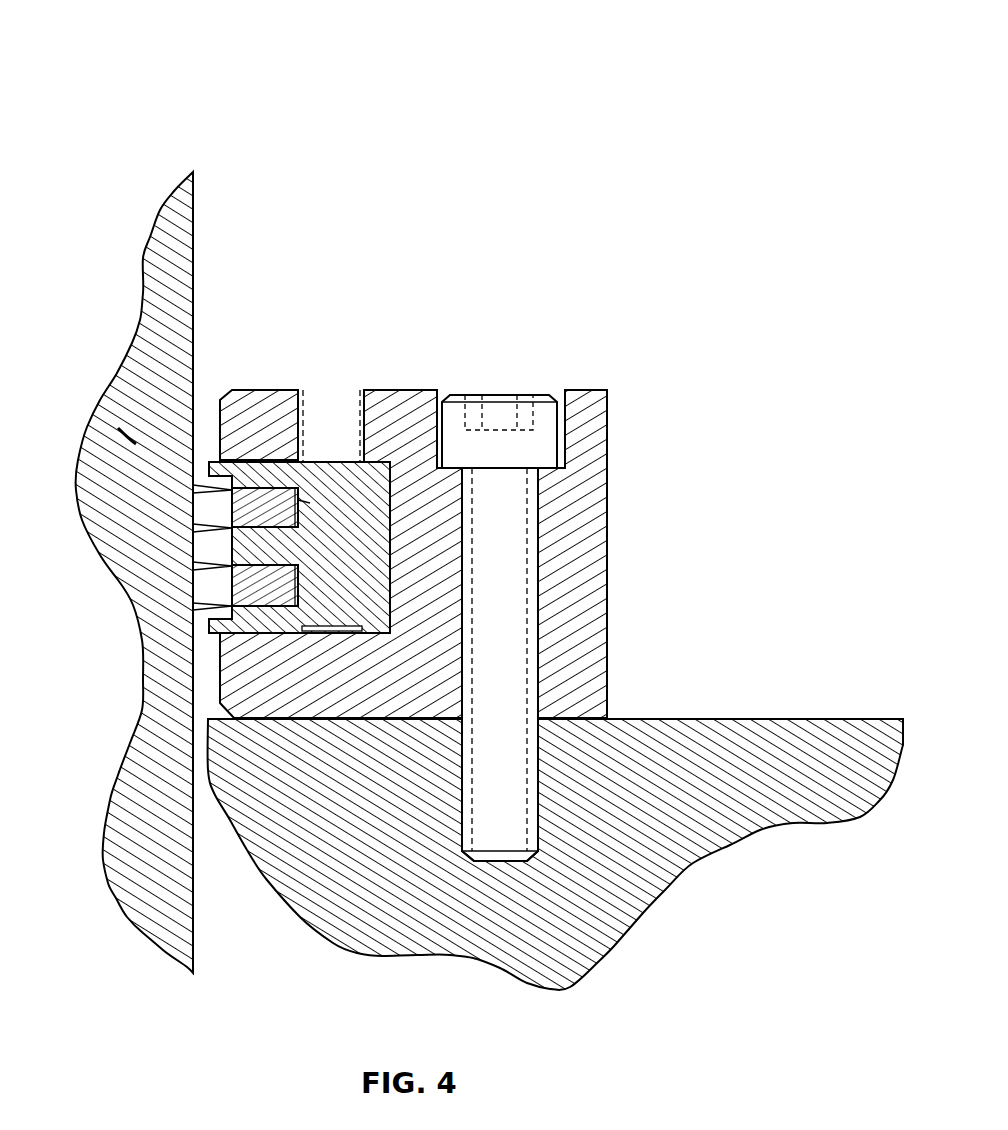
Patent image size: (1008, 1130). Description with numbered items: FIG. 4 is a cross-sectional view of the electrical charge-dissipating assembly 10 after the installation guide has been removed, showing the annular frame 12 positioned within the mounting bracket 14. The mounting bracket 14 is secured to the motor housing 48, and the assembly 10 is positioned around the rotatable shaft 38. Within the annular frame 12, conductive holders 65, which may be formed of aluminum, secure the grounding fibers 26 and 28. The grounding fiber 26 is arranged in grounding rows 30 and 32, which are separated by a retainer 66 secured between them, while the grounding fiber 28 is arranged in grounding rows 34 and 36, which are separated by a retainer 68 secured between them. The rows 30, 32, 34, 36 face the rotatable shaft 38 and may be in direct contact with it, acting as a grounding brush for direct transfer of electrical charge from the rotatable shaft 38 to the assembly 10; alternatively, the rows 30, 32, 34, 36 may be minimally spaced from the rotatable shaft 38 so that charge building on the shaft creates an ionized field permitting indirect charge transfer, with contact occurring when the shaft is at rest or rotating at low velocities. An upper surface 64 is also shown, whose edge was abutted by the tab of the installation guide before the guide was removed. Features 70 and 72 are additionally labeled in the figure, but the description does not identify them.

The electrical charge-dissipating assembly 10 is at (140, 52).
The annular frame 12 is at (368, 506).
The mounting bracket 14 is at (610, 386).
The grounding fiber 26 is at (229, 490).
The grounding fiber 28 is at (229, 566).
The grounding row 30 is at (135, 440).
The grounding row 32 is at (229, 528).
The grounding row 34 is at (208, 607).
The grounding row 36 is at (206, 620).
The rotatable shaft 38 is at (160, 240).
The motor housing 48 is at (768, 727).
The upper surface 64 is at (218, 462).
The conductive holders 65 is at (310, 503).
The retainer 66 is at (276, 503).
The retainer 68 is at (228, 634).
The edge 70 is at (204, 641).
The recess 72 is at (224, 648).